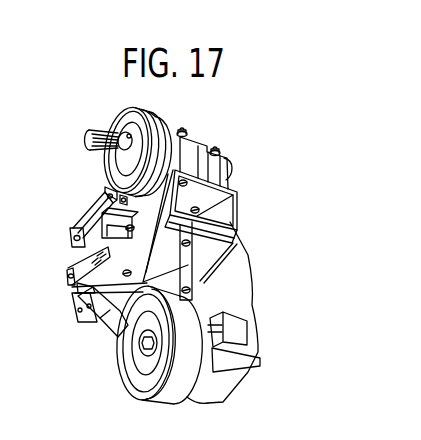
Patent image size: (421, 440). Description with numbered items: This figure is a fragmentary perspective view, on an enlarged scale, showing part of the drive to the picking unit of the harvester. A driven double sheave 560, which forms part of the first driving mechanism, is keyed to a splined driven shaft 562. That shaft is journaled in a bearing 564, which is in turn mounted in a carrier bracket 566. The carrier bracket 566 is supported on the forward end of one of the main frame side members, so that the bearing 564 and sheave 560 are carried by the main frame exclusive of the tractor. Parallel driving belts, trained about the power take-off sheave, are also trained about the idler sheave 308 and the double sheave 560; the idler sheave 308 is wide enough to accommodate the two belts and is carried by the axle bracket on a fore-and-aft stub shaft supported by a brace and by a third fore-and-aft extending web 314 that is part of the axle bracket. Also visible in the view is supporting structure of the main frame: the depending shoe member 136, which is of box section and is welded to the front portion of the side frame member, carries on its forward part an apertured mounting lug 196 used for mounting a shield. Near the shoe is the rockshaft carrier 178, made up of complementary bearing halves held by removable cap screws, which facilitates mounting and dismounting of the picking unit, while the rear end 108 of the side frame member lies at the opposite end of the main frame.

The rear end 108 is at (80, 291).
The shoe member 136 is at (110, 317).
The rockshaft carrier 178 is at (52, 272).
The apertured mounting lug 196 is at (74, 310).
The idler sheave 308 is at (141, 392).
The third fore-and-aft extending web 314 is at (223, 380).
The driven double sheave 560 is at (108, 168).
The splined driven shaft 562 is at (92, 135).
The bearing 564 is at (201, 160).
The carrier bracket 566 is at (226, 213).